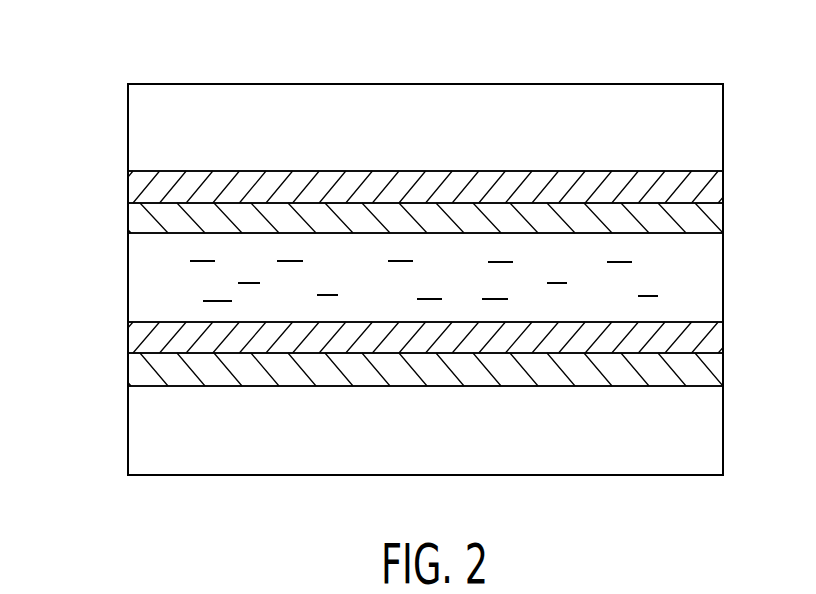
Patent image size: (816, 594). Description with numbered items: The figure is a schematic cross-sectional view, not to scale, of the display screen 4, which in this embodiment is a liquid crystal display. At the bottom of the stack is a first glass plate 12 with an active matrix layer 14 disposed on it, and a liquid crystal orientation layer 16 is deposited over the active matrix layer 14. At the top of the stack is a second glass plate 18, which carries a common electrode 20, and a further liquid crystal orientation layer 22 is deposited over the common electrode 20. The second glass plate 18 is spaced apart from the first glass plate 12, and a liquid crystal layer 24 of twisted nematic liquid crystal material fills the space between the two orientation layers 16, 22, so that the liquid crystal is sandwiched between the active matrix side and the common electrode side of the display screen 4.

The display screen 4 is at (493, 73).
The first glass plate 12 is at (135, 433).
The active matrix layer 14 is at (135, 372).
The liquid crystal orientation layer 16 is at (135, 337).
The second glass plate 18 is at (135, 123).
The common electrode 20 is at (135, 188).
The liquid crystal orientation layer 22 is at (135, 219).
The liquid crystal layer 24 is at (135, 280).